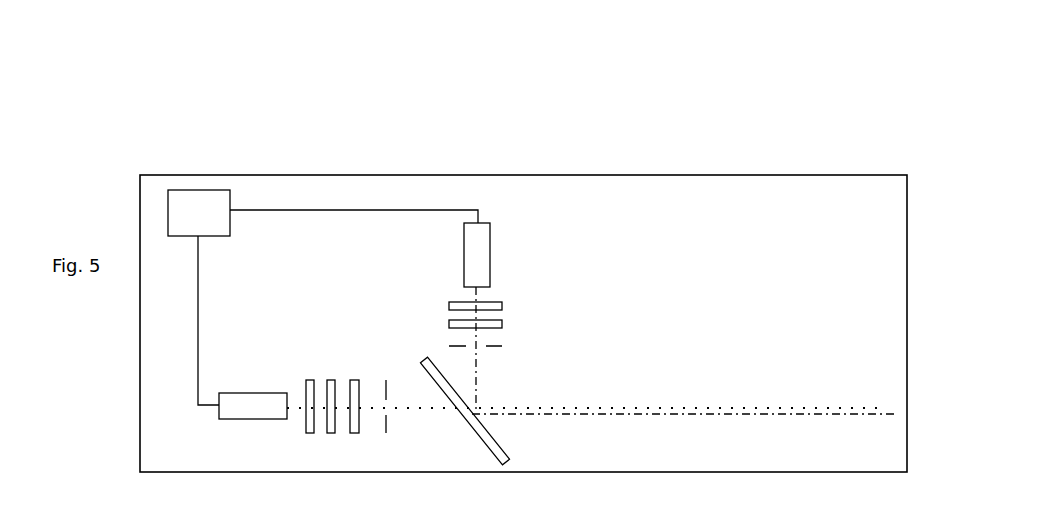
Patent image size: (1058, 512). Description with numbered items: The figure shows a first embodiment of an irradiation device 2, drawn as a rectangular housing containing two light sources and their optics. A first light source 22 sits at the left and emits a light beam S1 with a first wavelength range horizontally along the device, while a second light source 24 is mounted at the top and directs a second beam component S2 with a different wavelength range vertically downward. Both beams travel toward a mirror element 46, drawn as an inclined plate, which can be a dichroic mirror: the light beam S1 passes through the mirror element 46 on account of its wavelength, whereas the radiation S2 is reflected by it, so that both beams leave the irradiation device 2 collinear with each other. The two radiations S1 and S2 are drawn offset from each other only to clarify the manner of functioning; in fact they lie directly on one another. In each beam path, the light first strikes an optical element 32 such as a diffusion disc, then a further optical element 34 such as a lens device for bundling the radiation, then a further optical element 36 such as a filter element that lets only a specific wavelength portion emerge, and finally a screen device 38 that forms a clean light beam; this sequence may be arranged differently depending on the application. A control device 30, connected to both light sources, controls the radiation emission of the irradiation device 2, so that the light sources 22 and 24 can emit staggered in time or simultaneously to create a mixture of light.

The irradiation device 2 is at (337, 140).
The control device 30 is at (182, 213).
The first radiation or light source 22 is at (261, 400).
The second radiation or light source 24 is at (480, 262).
The optical element (diffusion disc) 32 is at (312, 388).
The further optical element (lens device) 34 is at (332, 390).
The further optical element (filter element) 36 is at (355, 390).
The screen device 38 is at (393, 386).
The mirror element 46 is at (490, 441).
The light beam S1 is at (578, 408).
The second beam component S2 is at (630, 415).